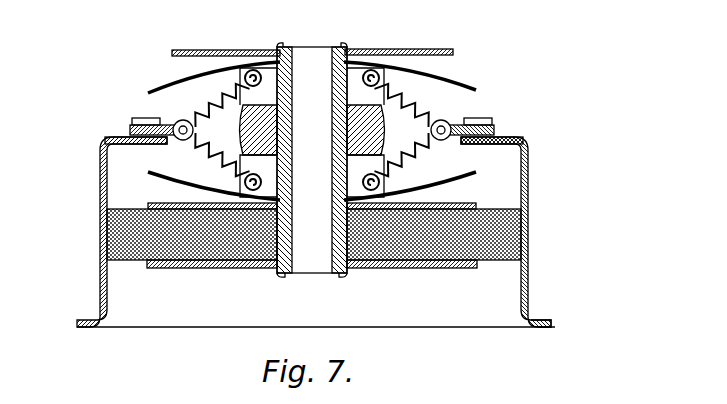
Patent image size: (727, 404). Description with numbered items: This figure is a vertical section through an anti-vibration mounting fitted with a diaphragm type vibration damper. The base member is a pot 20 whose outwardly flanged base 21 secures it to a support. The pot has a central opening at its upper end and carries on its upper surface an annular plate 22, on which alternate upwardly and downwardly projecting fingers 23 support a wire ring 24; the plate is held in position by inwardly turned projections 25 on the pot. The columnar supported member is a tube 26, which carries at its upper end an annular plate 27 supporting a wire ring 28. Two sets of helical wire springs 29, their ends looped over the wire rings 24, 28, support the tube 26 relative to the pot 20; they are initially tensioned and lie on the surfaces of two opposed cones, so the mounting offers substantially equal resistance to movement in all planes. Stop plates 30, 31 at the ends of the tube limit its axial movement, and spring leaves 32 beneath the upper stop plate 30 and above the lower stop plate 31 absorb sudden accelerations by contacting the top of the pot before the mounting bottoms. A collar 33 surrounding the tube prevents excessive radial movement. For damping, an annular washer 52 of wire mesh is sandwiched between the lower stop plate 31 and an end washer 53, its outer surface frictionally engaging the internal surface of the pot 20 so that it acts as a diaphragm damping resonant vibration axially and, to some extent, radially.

The pot 20 is at (533, 190).
The outwardly flanged base 21 is at (547, 311).
The annular plate 22 is at (500, 137).
The fingers 23 is at (449, 110).
The wire ring 24 is at (446, 140).
The inwardly turned projections 25 is at (490, 120).
The tube 26 is at (293, 47).
The annular plate 27 is at (336, 52).
The wire ring 28 is at (393, 62).
The helical wire springs 29 is at (197, 97).
The upper stop plate 30 is at (188, 50).
The lower stop plate 31 is at (461, 206).
The spring leaves 32 is at (168, 82).
The collar 33 is at (358, 133).
The annular washer 52 is at (113, 233).
The end washer 53 is at (211, 266).